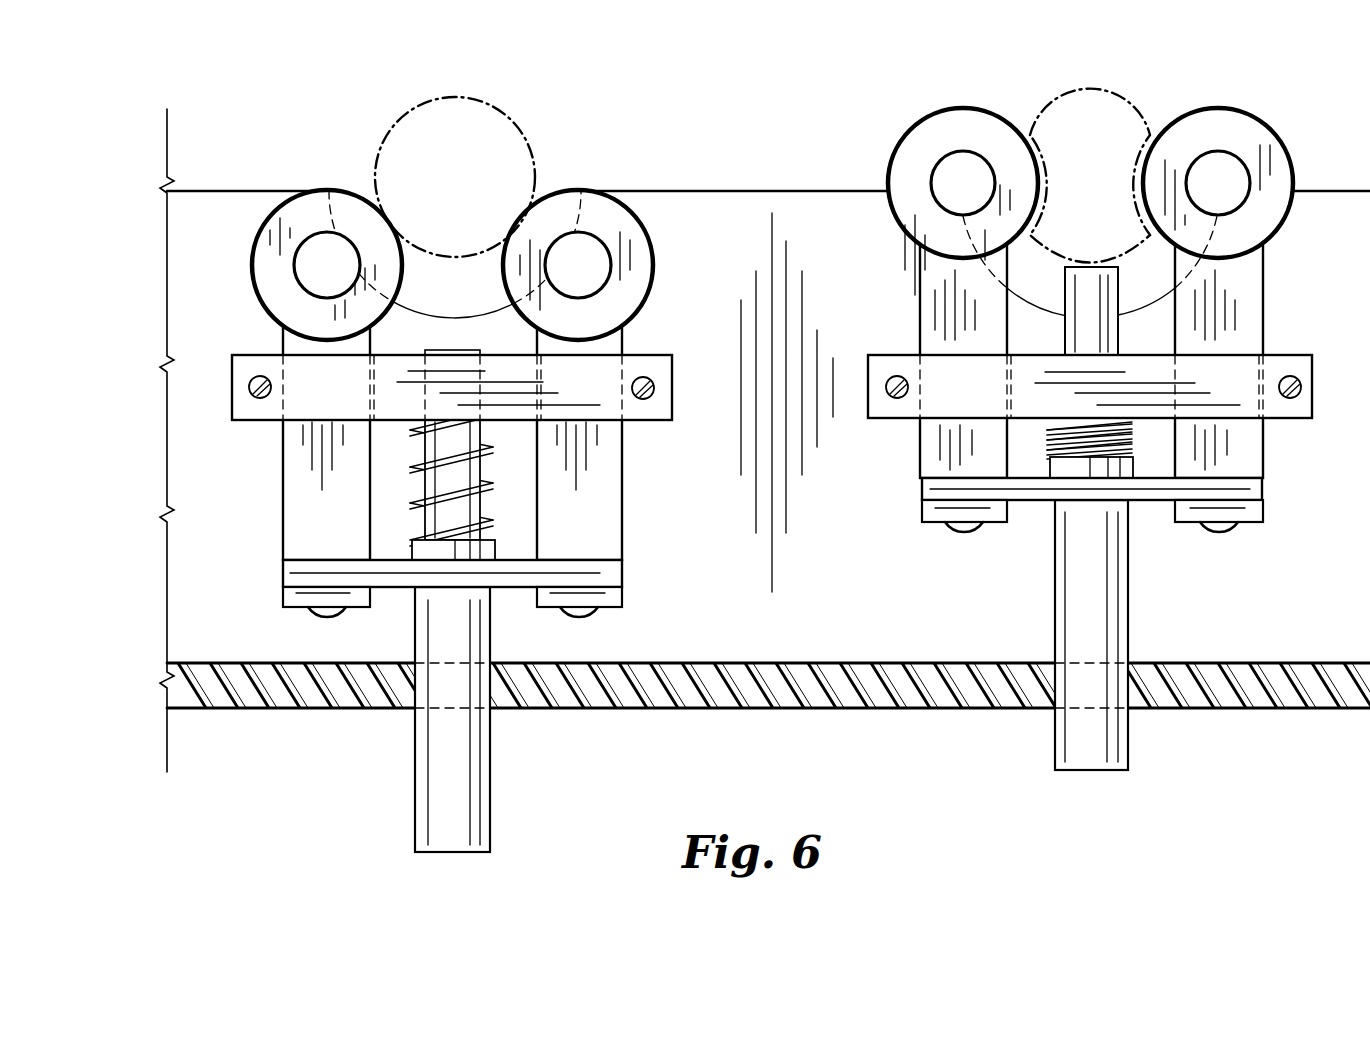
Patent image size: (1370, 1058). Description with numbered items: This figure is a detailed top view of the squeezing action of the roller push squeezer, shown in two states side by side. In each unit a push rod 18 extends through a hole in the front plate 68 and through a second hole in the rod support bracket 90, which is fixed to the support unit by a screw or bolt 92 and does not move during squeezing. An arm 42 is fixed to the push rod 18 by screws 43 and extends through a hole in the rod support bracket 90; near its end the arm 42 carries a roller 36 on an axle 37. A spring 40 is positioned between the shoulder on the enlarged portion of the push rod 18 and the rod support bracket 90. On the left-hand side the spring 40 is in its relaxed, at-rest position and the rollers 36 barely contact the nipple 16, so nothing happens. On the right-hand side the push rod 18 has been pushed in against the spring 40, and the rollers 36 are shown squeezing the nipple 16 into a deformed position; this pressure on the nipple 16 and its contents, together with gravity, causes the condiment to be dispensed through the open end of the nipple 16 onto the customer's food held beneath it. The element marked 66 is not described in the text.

The nipple 16 is at (483, 150).
The push rod 18 is at (490, 745).
The roller 36 is at (275, 277).
The axle 37 is at (597, 262).
The spring 40 is at (490, 485).
The arm 42 is at (283, 502).
The screws 43 is at (510, 588).
The rail 66 is at (819, 211).
The front plate 68 is at (622, 708).
The rod support bracket 90 is at (662, 412).
The screw or bolt 92 is at (252, 397).